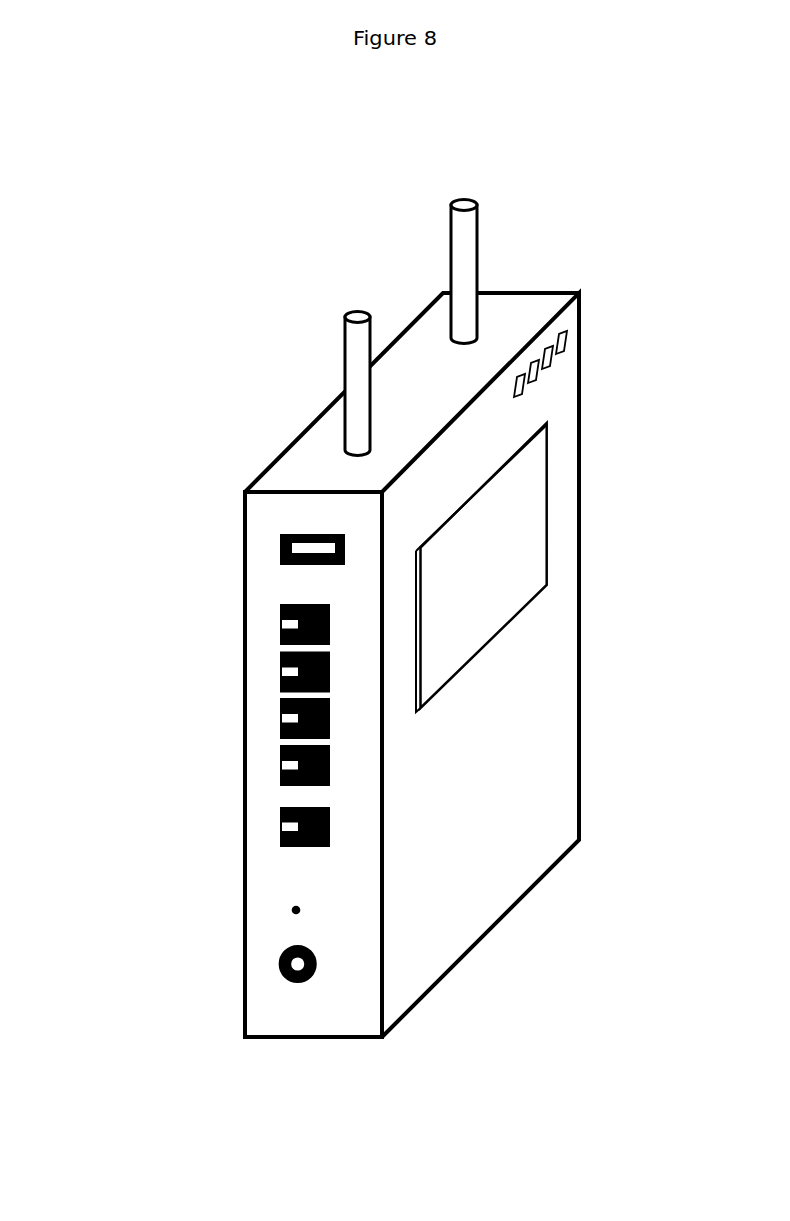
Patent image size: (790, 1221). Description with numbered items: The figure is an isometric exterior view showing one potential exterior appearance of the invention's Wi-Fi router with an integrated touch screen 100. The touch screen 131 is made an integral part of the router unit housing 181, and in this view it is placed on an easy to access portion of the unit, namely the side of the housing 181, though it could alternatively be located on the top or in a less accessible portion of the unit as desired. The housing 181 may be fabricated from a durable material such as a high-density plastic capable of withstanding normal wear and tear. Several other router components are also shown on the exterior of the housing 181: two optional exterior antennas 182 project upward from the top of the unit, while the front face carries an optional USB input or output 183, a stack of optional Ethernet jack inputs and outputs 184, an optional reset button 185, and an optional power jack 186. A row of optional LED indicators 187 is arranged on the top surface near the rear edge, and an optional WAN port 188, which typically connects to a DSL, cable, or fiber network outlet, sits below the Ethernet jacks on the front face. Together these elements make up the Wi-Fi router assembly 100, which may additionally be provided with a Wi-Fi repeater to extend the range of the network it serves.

The Wi-Fi router with integrated touch screen 100 is at (122, 122).
The router unit housing 181 is at (557, 793).
The exterior antennas 182 is at (443, 197).
The USB inputs or outputs 183 is at (267, 546).
The Ethernet jack inputs and outputs 184 is at (272, 671).
The reset button 185 is at (280, 909).
The power jack 186 is at (272, 965).
The LED indicators 187 is at (562, 362).
The WAN port 188 is at (272, 827).
The touch screen 131 is at (467, 553).